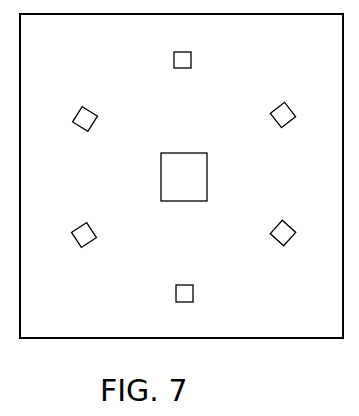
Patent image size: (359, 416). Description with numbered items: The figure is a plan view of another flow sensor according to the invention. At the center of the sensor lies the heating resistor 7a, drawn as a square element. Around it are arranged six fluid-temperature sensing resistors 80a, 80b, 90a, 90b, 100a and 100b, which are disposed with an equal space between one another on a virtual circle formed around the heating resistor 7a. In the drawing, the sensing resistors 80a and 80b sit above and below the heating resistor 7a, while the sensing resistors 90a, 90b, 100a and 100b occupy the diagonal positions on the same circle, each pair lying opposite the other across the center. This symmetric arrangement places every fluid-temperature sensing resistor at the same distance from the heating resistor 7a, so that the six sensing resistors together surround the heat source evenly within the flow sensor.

The heating resistor 7a is at (200, 180).
The fluid-temperature sensing resistor 80a is at (190, 54).
The fluid-temperature sensing resistor 80b is at (193, 292).
The fluid-temperature sensing resistor 90a is at (293, 104).
The fluid-temperature sensing resistor 90b is at (76, 245).
The fluid-temperature sensing resistor 100a is at (293, 243).
The fluid-temperature sensing resistor 100b is at (86, 106).